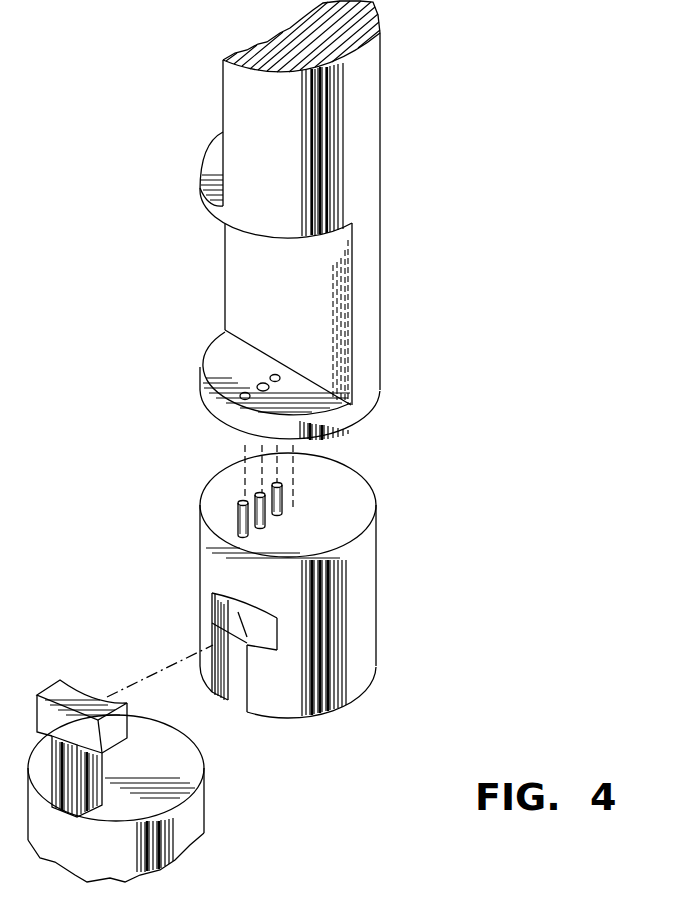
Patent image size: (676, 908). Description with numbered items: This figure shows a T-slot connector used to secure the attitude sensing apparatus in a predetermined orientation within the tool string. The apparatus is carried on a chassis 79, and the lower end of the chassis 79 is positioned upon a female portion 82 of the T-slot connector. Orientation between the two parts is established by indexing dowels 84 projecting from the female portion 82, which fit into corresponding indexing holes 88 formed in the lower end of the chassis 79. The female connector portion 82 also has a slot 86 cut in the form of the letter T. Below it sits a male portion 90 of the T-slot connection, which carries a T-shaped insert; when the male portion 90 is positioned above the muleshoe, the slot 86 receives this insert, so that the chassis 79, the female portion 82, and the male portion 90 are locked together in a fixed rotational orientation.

The chassis 79 is at (380, 205).
The female portion of T-slot connector 82 is at (377, 522).
The indexing dowels 84 is at (275, 484).
The slot 86 is at (258, 660).
The indexing holes 88 is at (273, 375).
The male portion of T-slot connection 90 is at (207, 792).